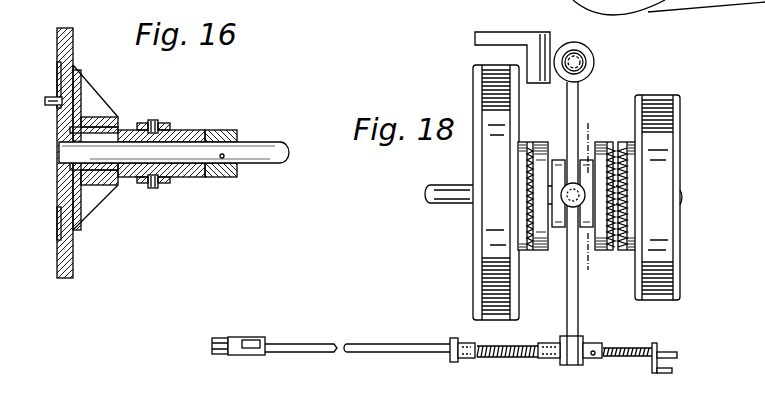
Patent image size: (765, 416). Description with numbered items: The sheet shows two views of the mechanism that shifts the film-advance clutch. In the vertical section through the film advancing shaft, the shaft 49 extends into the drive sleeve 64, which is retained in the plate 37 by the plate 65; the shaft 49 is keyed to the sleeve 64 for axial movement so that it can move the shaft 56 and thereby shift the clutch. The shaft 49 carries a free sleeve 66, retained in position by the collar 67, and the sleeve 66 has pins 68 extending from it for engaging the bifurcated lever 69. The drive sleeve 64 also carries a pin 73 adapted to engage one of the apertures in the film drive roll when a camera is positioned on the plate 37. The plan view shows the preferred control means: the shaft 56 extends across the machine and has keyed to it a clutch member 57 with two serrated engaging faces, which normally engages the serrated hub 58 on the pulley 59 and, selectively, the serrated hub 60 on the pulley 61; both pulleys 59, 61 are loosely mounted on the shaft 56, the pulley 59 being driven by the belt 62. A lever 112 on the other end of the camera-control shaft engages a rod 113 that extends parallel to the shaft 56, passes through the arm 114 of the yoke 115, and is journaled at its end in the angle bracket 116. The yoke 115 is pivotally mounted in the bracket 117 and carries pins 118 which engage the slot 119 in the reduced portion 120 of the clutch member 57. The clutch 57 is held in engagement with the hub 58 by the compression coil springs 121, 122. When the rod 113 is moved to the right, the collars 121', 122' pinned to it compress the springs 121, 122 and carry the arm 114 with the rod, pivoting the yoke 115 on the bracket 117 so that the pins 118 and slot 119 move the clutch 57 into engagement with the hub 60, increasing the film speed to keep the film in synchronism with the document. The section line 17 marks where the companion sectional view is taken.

In FIG. 16, the plate 37 is at (70, 42).
In FIG. 16, the plate 65 is at (58, 70).
In FIG. 16, the pin 73 is at (50, 106).
In FIG. 16, the drive sleeve 64 is at (62, 178).
In FIG. 16, the bifurcated lever 69 is at (167, 183).
In FIG. 16, the free sleeve 66 is at (197, 177).
In FIG. 16, the collar 67 is at (222, 130).
In FIG. 16, the shaft 49 is at (268, 146).
In FIG. 16, the pins 68 is at (153, 118).
In FIG. 18, the belt 62 is at (735, 8).
In FIG. 18, the bracket 117 is at (555, 45).
In FIG. 18, the yoke 115 is at (575, 123).
In FIG. 18, the arm 114 is at (575, 313).
In FIG. 18, the shaft 56 is at (445, 200).
In FIG. 18, the pulley 59 is at (487, 255).
In FIG. 18, the serrated hub 58 is at (522, 158).
In FIG. 18, the clutch member 57 is at (542, 250).
In FIG. 18, the reduced portion 120 is at (562, 160).
In FIG. 18, the slot 119 is at (568, 215).
In FIG. 18, the pins 118 is at (640, 168).
In FIG. 18, the serrated hub 60 is at (633, 183).
In FIG. 18, the pulley 61 is at (665, 228).
In FIG. 18, the section line 17 is at (582, 265).
In FIG. 18, the lever 112 is at (212, 343).
In FIG. 18, the rod 113 is at (323, 353).
In FIG. 18, the collar 121' is at (459, 365).
In FIG. 18, the compression coil spring 121 is at (507, 371).
In FIG. 18, the collar 122' is at (570, 373).
In FIG. 18, the compression coil spring 122 is at (625, 376).
In FIG. 18, the angle bracket 116 is at (657, 375).